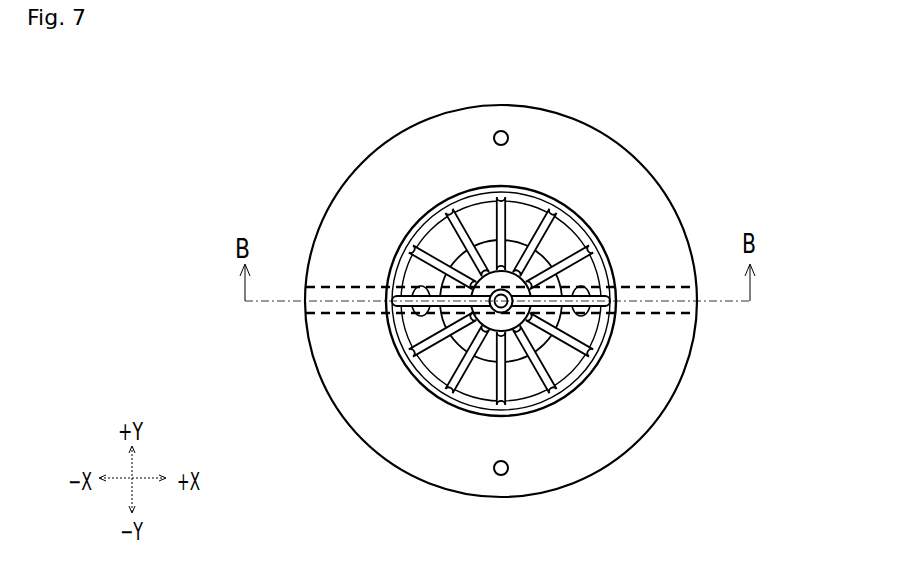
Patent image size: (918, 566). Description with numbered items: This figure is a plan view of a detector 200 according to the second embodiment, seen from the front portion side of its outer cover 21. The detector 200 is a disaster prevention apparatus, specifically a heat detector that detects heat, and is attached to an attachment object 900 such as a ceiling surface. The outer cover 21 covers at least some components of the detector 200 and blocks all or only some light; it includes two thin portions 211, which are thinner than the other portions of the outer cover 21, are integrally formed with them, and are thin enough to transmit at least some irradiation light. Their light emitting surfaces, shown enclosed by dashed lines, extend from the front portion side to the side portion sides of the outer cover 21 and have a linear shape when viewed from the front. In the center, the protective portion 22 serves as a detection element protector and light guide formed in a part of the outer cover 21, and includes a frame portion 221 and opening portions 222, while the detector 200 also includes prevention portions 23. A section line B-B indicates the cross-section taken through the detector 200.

The detector 200 is at (693, 147).
The attachment object 900 is at (792, 222).
The outer cover 21 is at (582, 163).
The thin portions 211 is at (325, 312).
The protective portion 22 is at (501, 301).
The frame portion 221 is at (510, 287).
The opening portions 222 is at (462, 277).
The prevention portions 23 is at (620, 307).